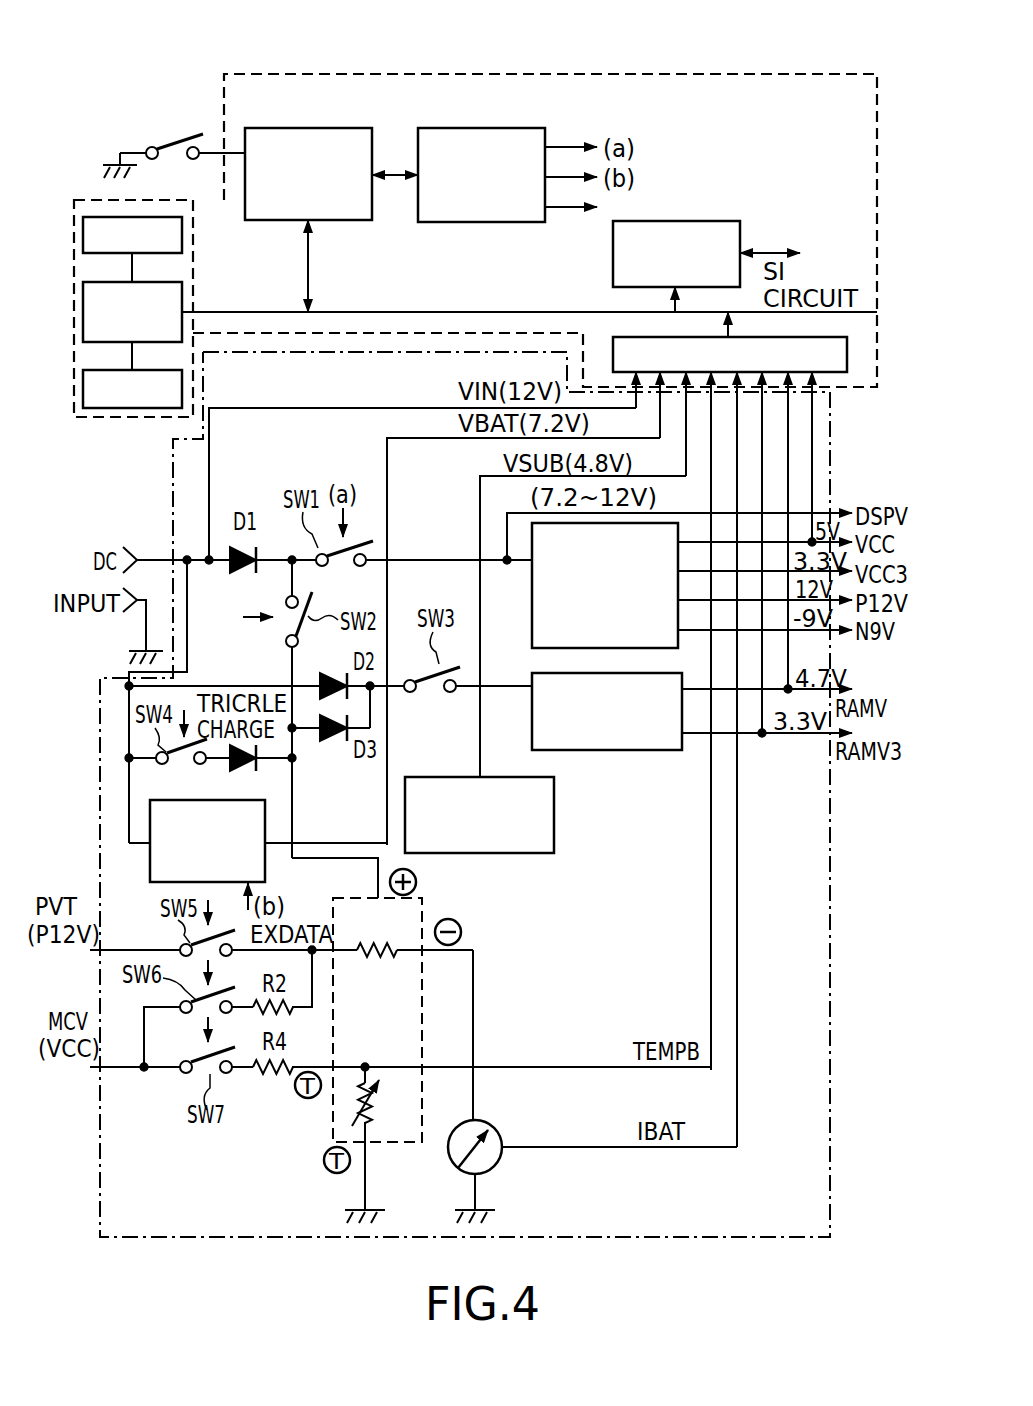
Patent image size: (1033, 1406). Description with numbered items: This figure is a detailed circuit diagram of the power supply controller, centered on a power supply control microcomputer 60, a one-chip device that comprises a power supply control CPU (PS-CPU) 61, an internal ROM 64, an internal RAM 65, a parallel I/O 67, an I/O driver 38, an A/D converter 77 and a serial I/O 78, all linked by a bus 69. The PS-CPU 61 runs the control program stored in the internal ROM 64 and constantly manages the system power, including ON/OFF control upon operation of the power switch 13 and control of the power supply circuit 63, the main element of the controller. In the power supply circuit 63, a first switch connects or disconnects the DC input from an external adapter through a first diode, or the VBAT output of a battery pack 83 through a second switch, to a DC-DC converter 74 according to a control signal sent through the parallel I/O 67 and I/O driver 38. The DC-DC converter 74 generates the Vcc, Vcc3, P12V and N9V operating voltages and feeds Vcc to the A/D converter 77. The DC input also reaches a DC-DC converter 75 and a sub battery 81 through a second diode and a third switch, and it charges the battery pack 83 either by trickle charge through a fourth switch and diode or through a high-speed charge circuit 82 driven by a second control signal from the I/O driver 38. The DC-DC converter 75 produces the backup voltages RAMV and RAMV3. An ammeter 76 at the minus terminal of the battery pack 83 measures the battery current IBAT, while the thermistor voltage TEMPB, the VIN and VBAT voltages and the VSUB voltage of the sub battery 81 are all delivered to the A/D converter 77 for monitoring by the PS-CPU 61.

The power switch 13 is at (172, 140).
The I/O drive 38 is at (524, 148).
The power supply control microcomputer 60 is at (238, 74).
The power supply control CPU (PS-CPU) 61 is at (176, 292).
The power supply circuit 63 is at (172, 470).
The internal ROM 64 is at (176, 233).
The internal RAM 65 is at (108, 398).
The parallel I/O 67 is at (352, 146).
The bus 69 is at (497, 311).
The DC-DC converter 74 is at (556, 618).
The DC-DC converter 75 is at (668, 751).
The ammeter 76 is at (502, 1138).
The A/D converter 77 is at (838, 373).
The serial I/O 78 is at (721, 226).
The sub battery 81 is at (540, 812).
The high-speed charge circuit 82 is at (160, 880).
The battery pack 83 is at (423, 994).